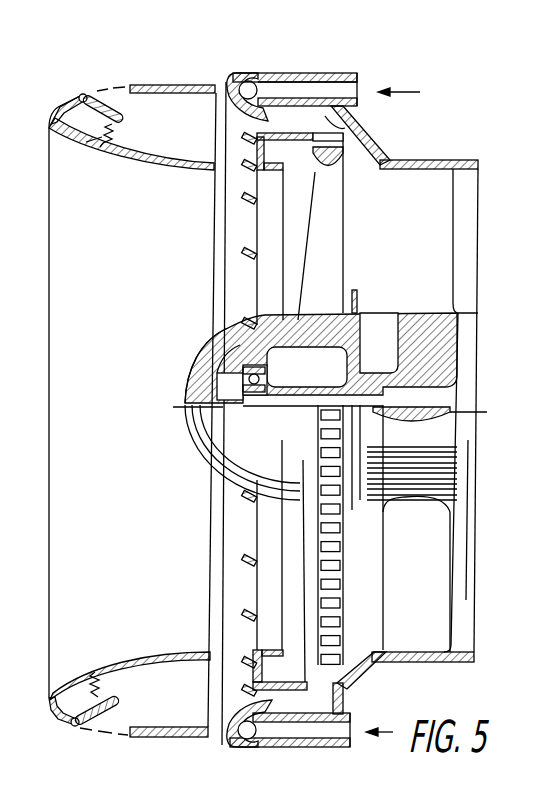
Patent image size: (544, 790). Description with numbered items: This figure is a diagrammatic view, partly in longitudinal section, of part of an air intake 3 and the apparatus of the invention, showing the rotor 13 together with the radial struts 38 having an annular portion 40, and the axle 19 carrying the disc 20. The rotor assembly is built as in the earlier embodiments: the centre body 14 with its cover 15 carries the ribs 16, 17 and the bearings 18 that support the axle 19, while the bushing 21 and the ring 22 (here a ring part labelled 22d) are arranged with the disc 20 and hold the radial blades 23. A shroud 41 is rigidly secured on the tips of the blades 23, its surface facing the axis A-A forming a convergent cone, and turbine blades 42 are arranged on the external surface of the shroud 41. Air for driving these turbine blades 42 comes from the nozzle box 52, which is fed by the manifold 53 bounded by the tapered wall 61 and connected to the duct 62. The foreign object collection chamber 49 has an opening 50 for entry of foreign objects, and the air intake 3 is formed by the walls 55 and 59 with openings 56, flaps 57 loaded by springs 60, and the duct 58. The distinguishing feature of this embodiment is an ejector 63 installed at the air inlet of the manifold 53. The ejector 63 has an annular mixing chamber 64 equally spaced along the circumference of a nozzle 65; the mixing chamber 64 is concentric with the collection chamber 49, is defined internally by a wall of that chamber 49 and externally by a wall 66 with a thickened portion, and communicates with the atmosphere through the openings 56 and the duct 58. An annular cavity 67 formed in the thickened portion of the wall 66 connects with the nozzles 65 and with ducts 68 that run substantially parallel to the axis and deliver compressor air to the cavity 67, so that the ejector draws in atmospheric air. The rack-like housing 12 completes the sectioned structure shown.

The air intake 3 is at (97, 650).
The rack housing 12 is at (372, 614).
The rotor 13 is at (208, 465).
The centre body 14 is at (243, 320).
The cover 15 is at (190, 378).
The rib 16 is at (227, 348).
The rib 17 is at (396, 320).
The bearings 18 is at (270, 374).
The axle 19 is at (435, 405).
The disc 20 is at (462, 375).
The bushing 21 is at (297, 397).
The ring 22 is at (232, 414).
The flange lip 22d is at (352, 300).
The radial blades 23 is at (308, 292).
The radial struts 38 is at (435, 232).
The annular portion 40 is at (450, 322).
The shroud 41 is at (330, 168).
The turbine blades 42 is at (366, 148).
The foreign object collection chamber 49 is at (222, 693).
The opening 50 is at (347, 697).
The nozzle box 52 is at (322, 147).
The manifold 53 is at (358, 118).
The wall 55 is at (74, 104).
The openings 56 is at (116, 86).
The flaps 57 is at (128, 123).
The duct 58 is at (173, 97).
The wall 59 is at (184, 166).
The springs 60 is at (98, 140).
The tapered wall 61 is at (395, 157).
The duct 62 is at (370, 182).
The ejector 63 is at (316, 110).
The annular mixing chamber 64 is at (285, 116).
The nozzle 65 is at (262, 102).
The wall 66 is at (361, 95).
The annular cavity 67 is at (243, 88).
The ducts 68 is at (347, 86).